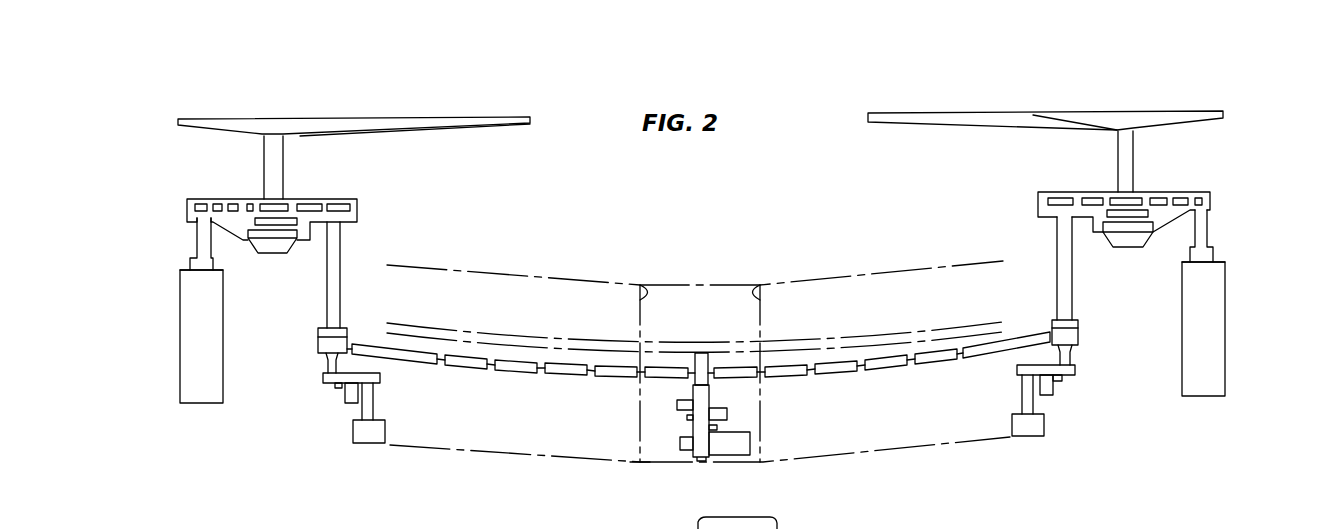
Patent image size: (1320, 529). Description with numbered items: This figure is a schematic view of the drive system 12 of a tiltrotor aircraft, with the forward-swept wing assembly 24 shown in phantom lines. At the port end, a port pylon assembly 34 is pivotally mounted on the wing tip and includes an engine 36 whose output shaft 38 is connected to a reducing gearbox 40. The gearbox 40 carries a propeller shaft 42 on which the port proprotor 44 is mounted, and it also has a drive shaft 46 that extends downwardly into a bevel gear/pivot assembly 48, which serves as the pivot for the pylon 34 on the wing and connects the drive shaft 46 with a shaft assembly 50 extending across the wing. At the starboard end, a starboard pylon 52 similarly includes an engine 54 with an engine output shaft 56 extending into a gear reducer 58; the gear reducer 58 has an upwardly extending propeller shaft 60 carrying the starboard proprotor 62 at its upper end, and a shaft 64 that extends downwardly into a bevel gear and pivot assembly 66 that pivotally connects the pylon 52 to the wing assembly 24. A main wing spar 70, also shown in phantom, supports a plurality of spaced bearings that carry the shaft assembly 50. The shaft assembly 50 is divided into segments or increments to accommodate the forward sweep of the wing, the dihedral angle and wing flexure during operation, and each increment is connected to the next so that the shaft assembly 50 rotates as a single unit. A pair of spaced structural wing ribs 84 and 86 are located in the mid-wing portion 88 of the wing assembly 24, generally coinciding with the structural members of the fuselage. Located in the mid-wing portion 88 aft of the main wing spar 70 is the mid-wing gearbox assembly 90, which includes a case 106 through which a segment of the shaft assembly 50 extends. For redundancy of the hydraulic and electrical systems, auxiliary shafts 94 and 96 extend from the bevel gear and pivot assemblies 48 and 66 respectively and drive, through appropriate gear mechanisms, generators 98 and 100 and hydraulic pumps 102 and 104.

The drive system 12 is at (938, 453).
The wing assembly 24 is at (733, 276).
The port pylon assembly 34 is at (176, 393).
The engine 36 is at (180, 350).
The output shaft 38 is at (196, 247).
The reducing gearbox 40 is at (201, 198).
The propeller shaft 42 is at (284, 158).
The port proprotor 44 is at (179, 121).
The drive shaft 46 is at (328, 283).
The bevel gear/pivot assembly 48 is at (320, 329).
The shaft assembly 50 is at (832, 384).
The starboard pylon 52 is at (1235, 307).
The engine 54 is at (1226, 330).
The engine output shaft 56 is at (1209, 222).
The gear reducer 58 is at (1185, 192).
The propeller shaft 60 is at (1134, 173).
The starboard proprotor 62 is at (1210, 111).
The shaft 64 is at (1073, 272).
The bevel gear and pivot assembly 66 is at (1079, 333).
The main wing spar 70 is at (468, 328).
The structural wing rib 84 is at (646, 283).
The structural wing rib 86 is at (753, 283).
The mid-wing portion 88 is at (653, 455).
The mid-wing gearbox assembly 90 is at (702, 465).
The auxiliary shaft 94 is at (328, 367).
The auxiliary shaft 96 is at (1076, 353).
The generator 98 is at (343, 400).
The generator 100 is at (1054, 389).
The hydraulic pump 102 is at (362, 443).
The hydraulic pump 104 is at (1046, 436).
The case 106 is at (702, 352).